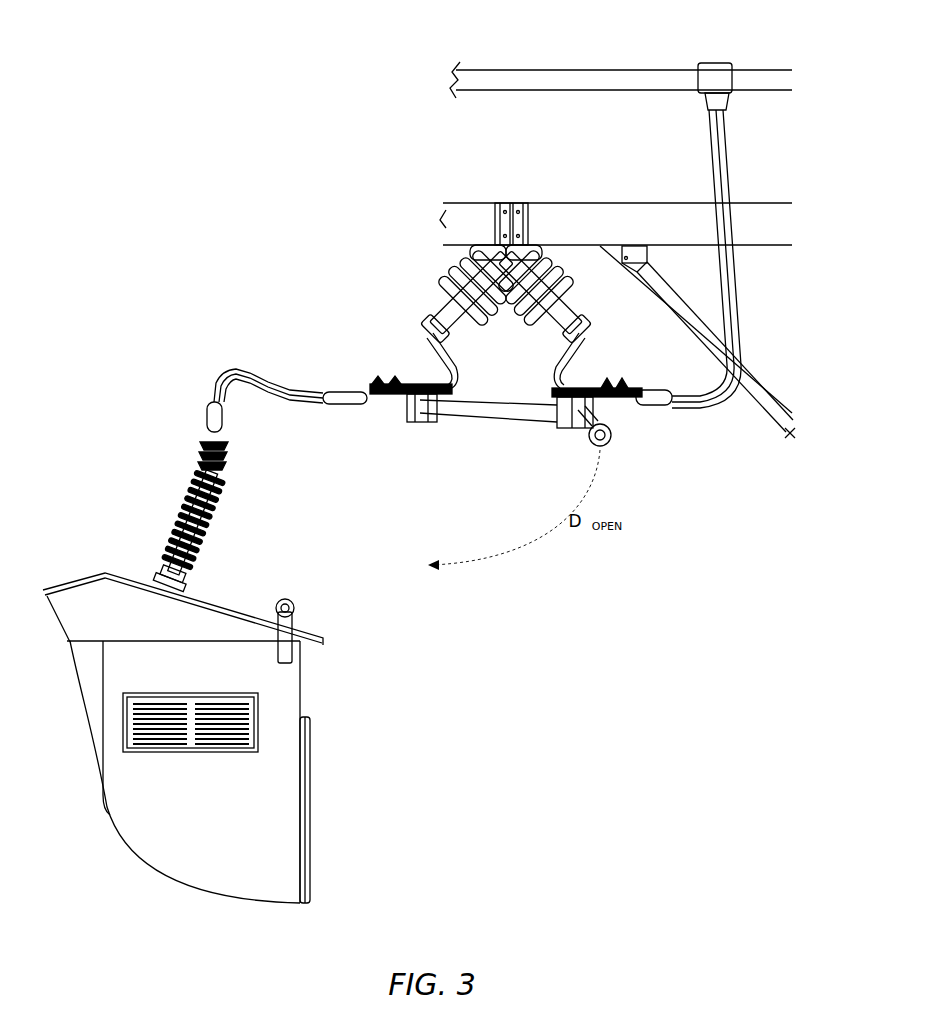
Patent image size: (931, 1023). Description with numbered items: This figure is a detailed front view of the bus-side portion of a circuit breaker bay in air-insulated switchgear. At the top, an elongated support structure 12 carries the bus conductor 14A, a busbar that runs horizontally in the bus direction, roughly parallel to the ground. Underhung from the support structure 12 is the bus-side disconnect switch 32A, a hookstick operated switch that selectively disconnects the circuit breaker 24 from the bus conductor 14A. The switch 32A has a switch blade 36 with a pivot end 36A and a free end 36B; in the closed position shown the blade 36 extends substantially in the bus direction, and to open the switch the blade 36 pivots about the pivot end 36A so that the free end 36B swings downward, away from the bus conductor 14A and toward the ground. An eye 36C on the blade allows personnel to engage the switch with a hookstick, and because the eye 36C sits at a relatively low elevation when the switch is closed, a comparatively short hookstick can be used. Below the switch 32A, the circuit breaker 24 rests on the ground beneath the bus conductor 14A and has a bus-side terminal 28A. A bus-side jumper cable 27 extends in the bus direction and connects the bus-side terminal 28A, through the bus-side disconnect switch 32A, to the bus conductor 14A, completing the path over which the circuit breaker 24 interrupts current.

The bus conductor 14A is at (553, 73).
The support structure 12 is at (660, 203).
The bus-side disconnect switch 32A is at (381, 316).
The switch blade 36 is at (492, 411).
The pivot end 36A is at (425, 421).
The free end 36B is at (568, 429).
The eye 36C is at (612, 437).
The bus-side jumper cable 27 is at (224, 373).
The bus-side terminal 28A is at (208, 573).
The circuit breaker 24 is at (330, 772).